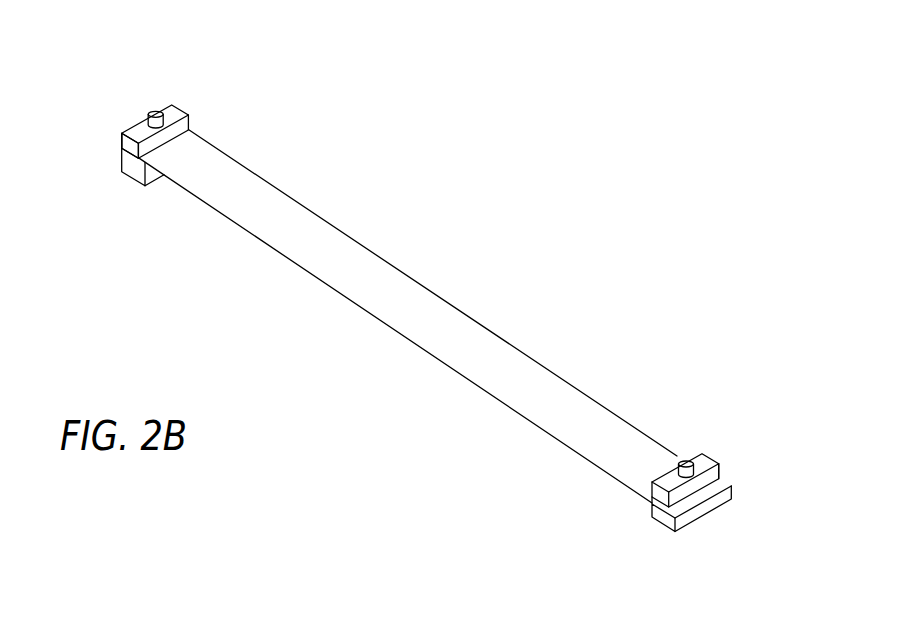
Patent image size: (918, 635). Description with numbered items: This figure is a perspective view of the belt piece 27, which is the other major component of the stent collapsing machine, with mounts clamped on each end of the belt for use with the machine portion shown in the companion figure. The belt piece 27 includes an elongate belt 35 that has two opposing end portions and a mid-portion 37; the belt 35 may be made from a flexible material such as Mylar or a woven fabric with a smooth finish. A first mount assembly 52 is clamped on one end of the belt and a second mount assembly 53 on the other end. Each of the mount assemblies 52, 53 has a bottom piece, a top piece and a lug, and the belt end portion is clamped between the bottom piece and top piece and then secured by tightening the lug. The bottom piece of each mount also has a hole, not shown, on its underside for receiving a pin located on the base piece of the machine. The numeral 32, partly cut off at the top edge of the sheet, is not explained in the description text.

The belt piece 27 is at (472, 233).
The frame 32 is at (803, 7).
The elongate belt 35 is at (482, 333).
The mid-portion 37 is at (432, 342).
The first mount assembly 52 is at (126, 142).
The second mount assembly 53 is at (722, 467).